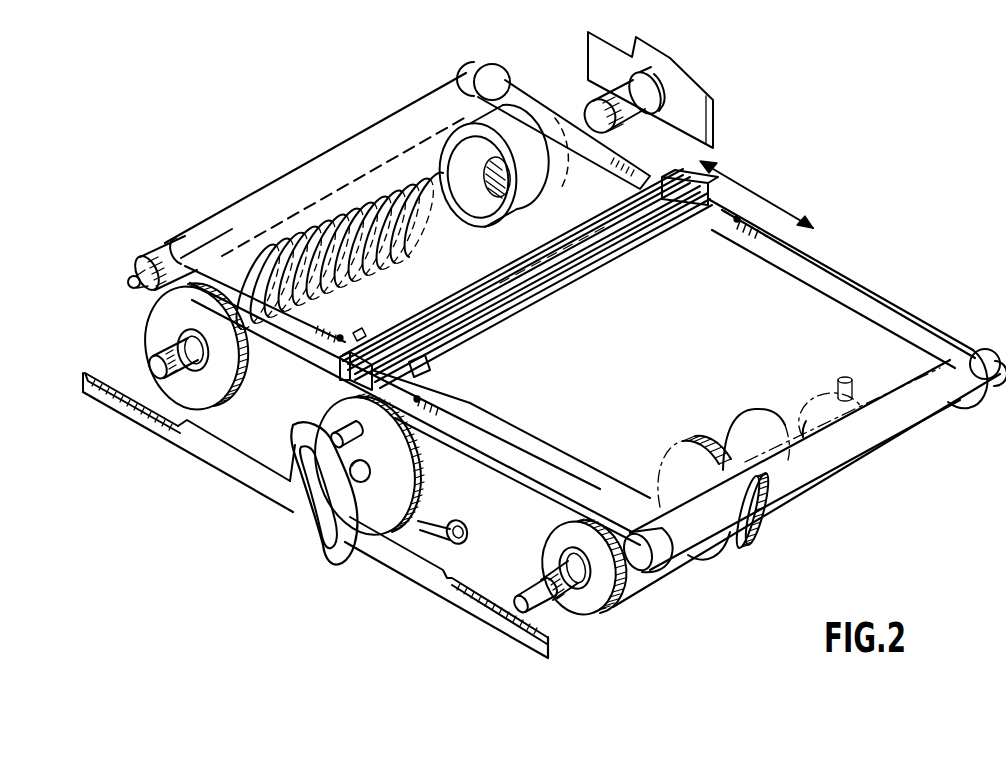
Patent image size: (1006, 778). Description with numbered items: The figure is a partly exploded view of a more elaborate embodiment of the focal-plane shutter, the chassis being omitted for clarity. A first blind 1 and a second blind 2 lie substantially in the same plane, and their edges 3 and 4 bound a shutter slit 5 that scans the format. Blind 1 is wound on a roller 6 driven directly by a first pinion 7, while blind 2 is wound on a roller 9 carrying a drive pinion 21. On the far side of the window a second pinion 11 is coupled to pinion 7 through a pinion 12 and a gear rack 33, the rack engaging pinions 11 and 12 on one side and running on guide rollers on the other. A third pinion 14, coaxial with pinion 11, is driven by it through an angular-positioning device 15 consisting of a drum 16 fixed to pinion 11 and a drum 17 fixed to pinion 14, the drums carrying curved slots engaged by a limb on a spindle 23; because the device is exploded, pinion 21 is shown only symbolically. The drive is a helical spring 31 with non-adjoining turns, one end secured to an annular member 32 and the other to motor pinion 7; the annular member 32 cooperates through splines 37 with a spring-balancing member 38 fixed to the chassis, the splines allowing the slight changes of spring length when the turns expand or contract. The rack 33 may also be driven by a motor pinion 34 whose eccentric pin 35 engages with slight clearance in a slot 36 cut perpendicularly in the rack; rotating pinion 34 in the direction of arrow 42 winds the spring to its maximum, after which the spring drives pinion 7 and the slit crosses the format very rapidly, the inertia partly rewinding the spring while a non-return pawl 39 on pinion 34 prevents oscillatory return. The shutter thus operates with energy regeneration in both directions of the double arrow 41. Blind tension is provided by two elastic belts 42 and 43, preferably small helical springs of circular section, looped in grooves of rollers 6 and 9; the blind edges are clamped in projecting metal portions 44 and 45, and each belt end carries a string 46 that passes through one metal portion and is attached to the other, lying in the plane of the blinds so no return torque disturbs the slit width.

The first blind 1 is at (662, 164).
The second blind 2 is at (793, 300).
The edge of the first blind 3 is at (462, 310).
The edge of the second blind 4 is at (595, 248).
The shutter slit 5 is at (510, 283).
The roller 6 is at (494, 66).
The first pinion 7 is at (157, 318).
The roller 9 is at (980, 350).
The second pinion 11 is at (585, 605).
The pinion 12 is at (152, 348).
The third pinion 14 is at (723, 558).
The angular-positioning device 15 is at (745, 560).
The drum 16 is at (643, 581).
The drum 17 is at (798, 503).
The drive pinion 21 is at (765, 523).
The spindle 23 is at (532, 607).
The helical spring 31 is at (327, 237).
The annular member 32 is at (490, 137).
The gear rack 33 is at (226, 460).
The pinion 34 is at (387, 463).
The eccentric pin 35 is at (337, 433).
The slot 36 is at (318, 522).
The splines 37 is at (626, 130).
The spring-balancing member 38 is at (690, 100).
The non-return pawl 39 is at (437, 525).
The double arrow 41 is at (760, 200).
The elastic belt 42 is at (547, 470).
The elastic belt 43 is at (875, 297).
The metal portion 44 is at (607, 205).
The metal portion 45 is at (690, 208).
The wire or string 46 is at (358, 340).